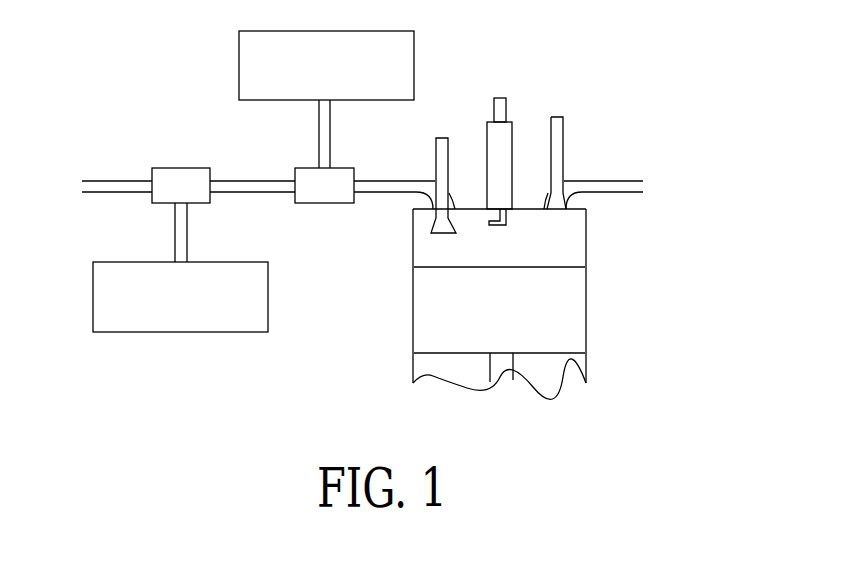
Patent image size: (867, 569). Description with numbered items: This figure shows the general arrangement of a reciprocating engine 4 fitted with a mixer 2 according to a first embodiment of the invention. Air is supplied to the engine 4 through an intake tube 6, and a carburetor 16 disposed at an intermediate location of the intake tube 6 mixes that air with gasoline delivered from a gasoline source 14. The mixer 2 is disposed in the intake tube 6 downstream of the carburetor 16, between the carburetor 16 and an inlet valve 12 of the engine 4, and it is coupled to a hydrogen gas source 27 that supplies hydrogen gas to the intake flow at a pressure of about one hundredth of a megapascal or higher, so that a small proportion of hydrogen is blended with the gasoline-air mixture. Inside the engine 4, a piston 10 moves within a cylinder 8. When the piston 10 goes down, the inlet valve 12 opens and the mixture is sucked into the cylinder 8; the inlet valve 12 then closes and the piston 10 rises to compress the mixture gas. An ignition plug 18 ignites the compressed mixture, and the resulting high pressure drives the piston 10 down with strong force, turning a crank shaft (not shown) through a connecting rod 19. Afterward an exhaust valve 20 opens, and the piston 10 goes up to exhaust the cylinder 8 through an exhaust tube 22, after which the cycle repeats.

The mixer 2 is at (325, 192).
The reciprocating engine 4 is at (471, 113).
The intake tube 6 is at (118, 187).
The cylinder 8 is at (575, 250).
The piston 10 is at (563, 318).
The inlet valve 12 is at (442, 157).
The gasoline source 14 is at (245, 310).
The carburetor 16 is at (187, 180).
The ignition plug 18 is at (500, 152).
The connecting rod 19 is at (502, 362).
The exhaust valve 20 is at (557, 145).
The exhaust tube 22 is at (620, 185).
The hydrogen gas source 27 is at (258, 53).